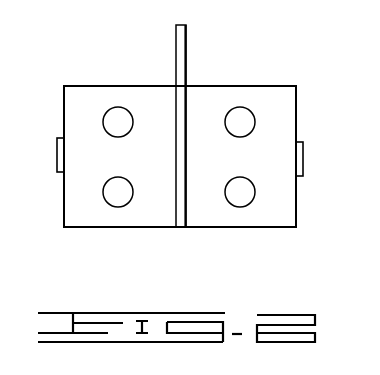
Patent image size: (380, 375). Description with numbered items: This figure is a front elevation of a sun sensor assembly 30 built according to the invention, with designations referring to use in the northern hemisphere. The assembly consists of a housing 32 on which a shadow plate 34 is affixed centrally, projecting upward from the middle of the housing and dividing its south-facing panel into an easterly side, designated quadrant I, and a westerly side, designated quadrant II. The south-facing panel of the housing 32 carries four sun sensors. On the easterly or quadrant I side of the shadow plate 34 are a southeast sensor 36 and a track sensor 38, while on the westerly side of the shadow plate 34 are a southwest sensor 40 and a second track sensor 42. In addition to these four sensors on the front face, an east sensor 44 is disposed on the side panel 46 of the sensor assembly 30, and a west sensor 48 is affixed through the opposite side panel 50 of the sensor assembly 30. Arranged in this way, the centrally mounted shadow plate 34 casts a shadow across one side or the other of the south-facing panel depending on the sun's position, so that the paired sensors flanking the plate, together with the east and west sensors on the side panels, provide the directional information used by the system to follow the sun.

The sun sensor assembly 30 is at (207, 60).
The housing 32 is at (103, 85).
The shadow plate 34 is at (176, 47).
The southeast sensor 36 is at (243, 208).
The track sensor 38 is at (243, 137).
The southwest sensor 40 is at (124, 208).
The track sensor 42 is at (120, 137).
The east sensor 44 is at (303, 152).
The side panel 46 is at (297, 108).
The west sensor 48 is at (56, 163).
The side panel 50 is at (64, 100).